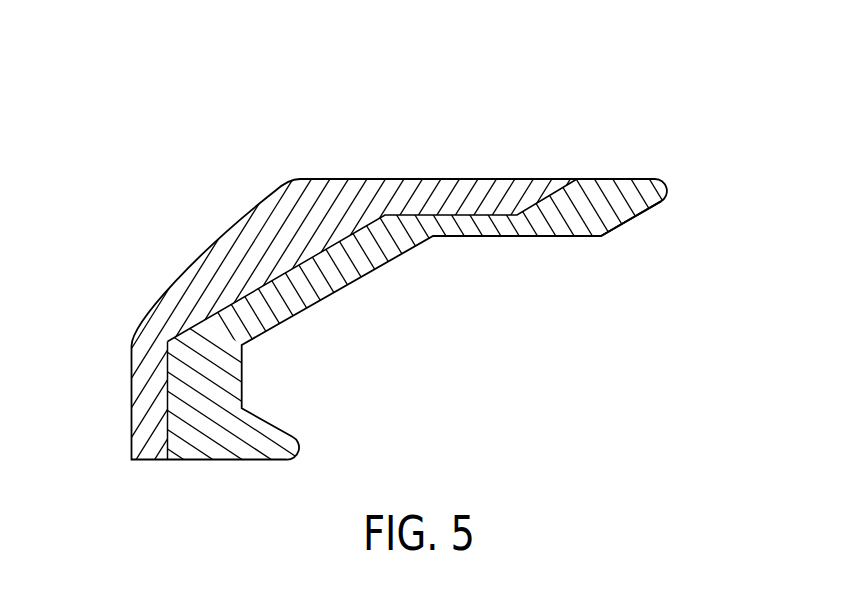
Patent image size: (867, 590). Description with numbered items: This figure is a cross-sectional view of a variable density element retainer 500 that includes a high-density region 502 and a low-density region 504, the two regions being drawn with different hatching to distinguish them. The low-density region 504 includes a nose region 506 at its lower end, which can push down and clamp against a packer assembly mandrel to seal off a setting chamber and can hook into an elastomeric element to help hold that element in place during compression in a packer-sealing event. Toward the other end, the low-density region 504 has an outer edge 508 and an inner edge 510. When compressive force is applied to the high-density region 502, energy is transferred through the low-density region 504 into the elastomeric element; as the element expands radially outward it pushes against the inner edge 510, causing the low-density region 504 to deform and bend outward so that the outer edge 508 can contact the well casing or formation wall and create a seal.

The variable density element retainer 500 is at (619, 78).
The high-density region 502 is at (322, 197).
The low-density region 504 is at (463, 213).
The nose region 506 is at (192, 422).
The outer edge 508 is at (627, 205).
The inner edge 510 is at (625, 220).